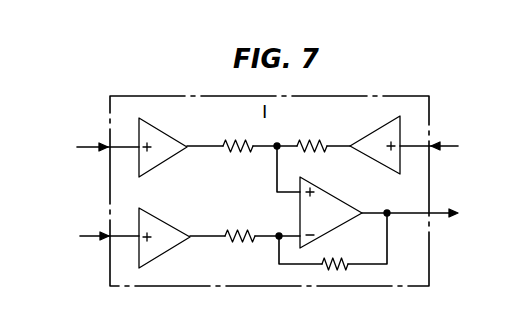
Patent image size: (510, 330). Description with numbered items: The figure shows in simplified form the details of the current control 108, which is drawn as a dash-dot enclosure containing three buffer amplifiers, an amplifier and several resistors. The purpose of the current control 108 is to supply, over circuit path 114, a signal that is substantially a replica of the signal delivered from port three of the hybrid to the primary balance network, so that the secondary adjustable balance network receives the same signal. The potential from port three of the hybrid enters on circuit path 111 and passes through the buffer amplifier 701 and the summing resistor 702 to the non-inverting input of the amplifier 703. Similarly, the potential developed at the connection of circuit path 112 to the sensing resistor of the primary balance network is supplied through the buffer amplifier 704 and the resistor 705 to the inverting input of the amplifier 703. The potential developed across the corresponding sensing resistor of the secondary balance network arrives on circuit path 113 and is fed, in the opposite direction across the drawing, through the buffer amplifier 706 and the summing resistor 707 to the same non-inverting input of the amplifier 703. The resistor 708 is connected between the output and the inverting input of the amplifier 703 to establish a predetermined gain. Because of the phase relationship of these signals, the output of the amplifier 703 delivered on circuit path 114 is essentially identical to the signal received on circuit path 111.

The current control 108 is at (386, 96).
The circuit path 111 is at (91, 144).
The circuit path 112 is at (100, 233).
The circuit path 113 is at (444, 143).
The circuit path 114 is at (440, 211).
The buffer amplifier 701 is at (164, 133).
The summing resistor 702 is at (236, 155).
The amplifier 703 is at (335, 198).
The buffer amplifier 704 is at (170, 222).
The resistor 705 is at (233, 229).
The buffer amplifier 706 is at (381, 164).
The summing resistor 707 is at (313, 137).
The resistor 708 is at (338, 257).